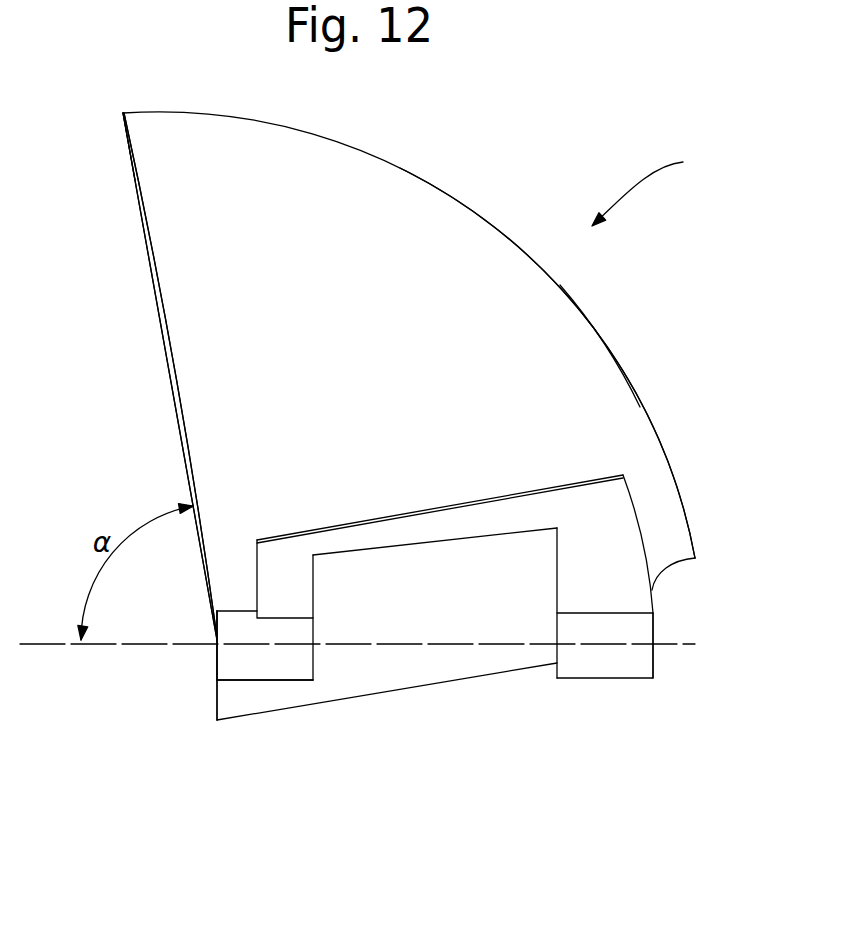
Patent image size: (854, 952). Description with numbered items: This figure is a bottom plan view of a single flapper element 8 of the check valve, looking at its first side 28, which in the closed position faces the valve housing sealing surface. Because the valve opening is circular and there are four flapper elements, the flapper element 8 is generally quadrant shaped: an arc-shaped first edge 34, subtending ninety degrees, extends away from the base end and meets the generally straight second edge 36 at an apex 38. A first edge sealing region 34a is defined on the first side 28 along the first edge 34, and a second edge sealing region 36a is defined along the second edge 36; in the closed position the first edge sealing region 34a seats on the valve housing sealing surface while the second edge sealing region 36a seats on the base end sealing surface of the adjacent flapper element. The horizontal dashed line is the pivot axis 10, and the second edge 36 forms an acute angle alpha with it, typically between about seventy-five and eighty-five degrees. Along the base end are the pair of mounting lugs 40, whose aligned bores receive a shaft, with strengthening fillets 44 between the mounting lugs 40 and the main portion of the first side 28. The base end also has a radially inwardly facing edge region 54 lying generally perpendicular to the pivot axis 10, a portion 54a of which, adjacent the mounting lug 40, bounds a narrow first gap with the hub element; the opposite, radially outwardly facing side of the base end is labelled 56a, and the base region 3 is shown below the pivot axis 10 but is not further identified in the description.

The base / mounting foot 3 is at (407, 687).
The flapper element 8 is at (648, 185).
The pivot axis 10 is at (690, 645).
The first side 28 is at (368, 339).
The first edge 34 is at (645, 407).
The first edge sealing region 34a is at (593, 370).
The second edge 36 is at (177, 405).
The second edge sealing region 36a is at (170, 334).
The apex 38 is at (123, 113).
The mounting lug 40 is at (253, 680).
The fillet 44 is at (627, 553).
The radially inwardly facing edge region 54 is at (217, 710).
The portion of the inwardly facing edge region 54a is at (217, 660).
The right bearing block face 56a is at (657, 632).